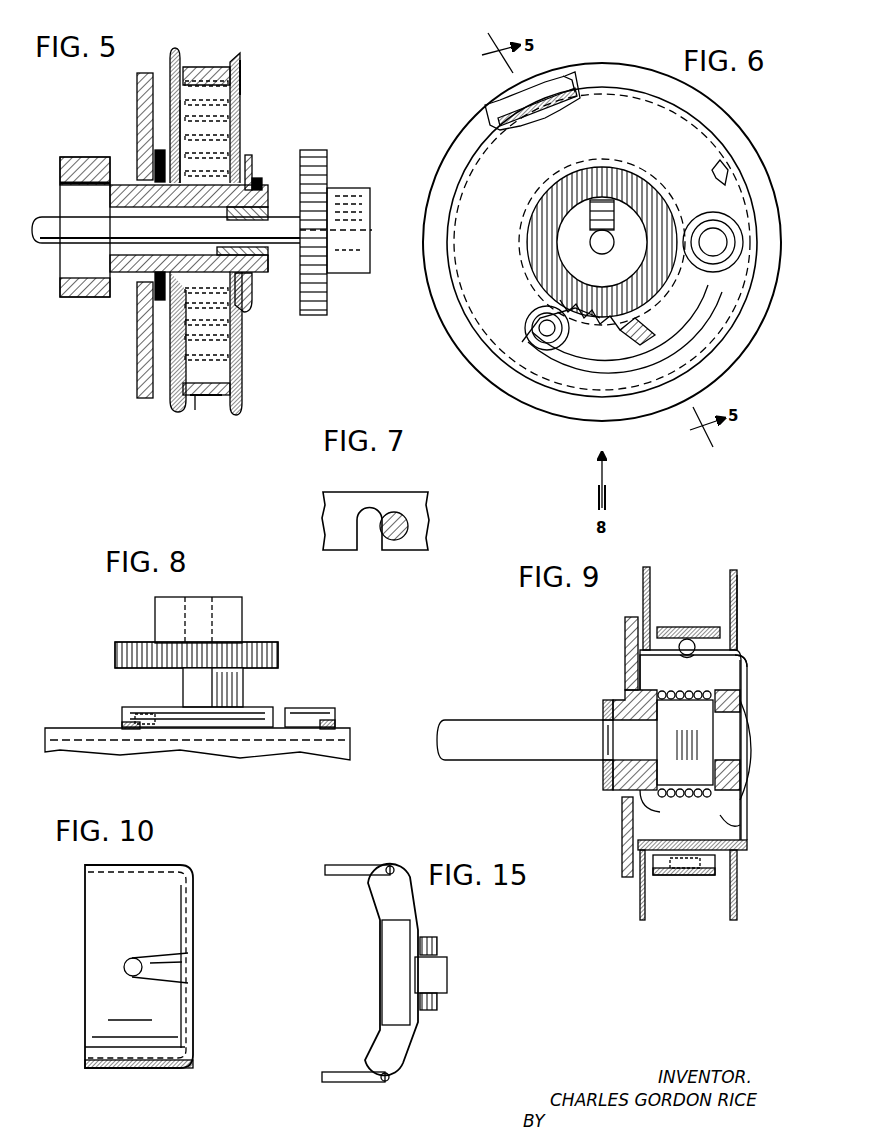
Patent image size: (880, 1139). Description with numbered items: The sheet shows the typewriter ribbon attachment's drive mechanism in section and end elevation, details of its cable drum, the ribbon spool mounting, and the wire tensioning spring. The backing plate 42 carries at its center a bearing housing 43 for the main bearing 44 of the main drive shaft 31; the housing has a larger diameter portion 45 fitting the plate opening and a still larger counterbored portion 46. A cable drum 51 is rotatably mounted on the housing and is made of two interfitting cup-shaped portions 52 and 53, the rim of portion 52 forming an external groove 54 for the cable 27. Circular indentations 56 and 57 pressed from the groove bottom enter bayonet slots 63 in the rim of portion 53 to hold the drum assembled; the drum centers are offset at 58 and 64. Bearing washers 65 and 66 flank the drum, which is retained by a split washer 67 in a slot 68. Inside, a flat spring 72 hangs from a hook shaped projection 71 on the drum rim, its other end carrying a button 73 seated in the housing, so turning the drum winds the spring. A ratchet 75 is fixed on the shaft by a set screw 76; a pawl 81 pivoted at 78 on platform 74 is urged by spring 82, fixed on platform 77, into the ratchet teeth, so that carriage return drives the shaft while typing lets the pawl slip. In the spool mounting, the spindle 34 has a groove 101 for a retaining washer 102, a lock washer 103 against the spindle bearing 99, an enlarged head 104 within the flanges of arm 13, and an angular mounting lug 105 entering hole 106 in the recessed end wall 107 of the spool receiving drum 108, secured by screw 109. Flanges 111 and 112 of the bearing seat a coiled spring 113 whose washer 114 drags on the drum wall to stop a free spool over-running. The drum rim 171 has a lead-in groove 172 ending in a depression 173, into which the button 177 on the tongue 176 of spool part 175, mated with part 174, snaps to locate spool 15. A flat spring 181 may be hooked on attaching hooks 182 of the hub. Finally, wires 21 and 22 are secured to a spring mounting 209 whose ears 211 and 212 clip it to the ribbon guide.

In FIG. 9, the arm 13 is at (626, 640).
In FIG. 9, the spool 15 is at (738, 590).
In FIG. 15, the wire 21 is at (330, 865).
In FIG. 15, the wire 22 is at (340, 1082).
In FIG. 5, the cable 27 is at (198, 410).
In FIG. 5, the main drive shaft 31 is at (48, 232).
In FIG. 6, the main drive shaft 31 is at (592, 238).
In FIG. 8, the main drive shaft 31 is at (212, 628).
In FIG. 9, the spindle 34 is at (500, 760).
In FIG. 5, the backing plate 42 is at (138, 370).
In FIG. 5, the bearing housing 43 is at (262, 270).
In FIG. 5, the main bearing 44 is at (255, 255).
In FIG. 5, the larger diameter portion 45 is at (130, 272).
In FIG. 5, the still larger diameter portion 46 is at (75, 297).
In FIG. 5, the cable drum 51 is at (245, 385).
In FIG. 5, the cup-shaped portion 52 is at (172, 400).
In FIG. 5, the cup-shaped portion 53 is at (222, 390).
In FIG. 6, the cup-shaped portion 53 is at (712, 148).
In FIG. 7, the cup-shaped portion 53 is at (366, 502).
In FIG. 8, the cup-shaped portion 53 is at (95, 742).
In FIG. 5, the external groove 54 is at (206, 398).
In FIG. 6, the external groove 54 is at (560, 80).
In FIG. 5, the indentation 56 is at (243, 90).
In FIG. 6, the indentation 56 is at (498, 110).
In FIG. 7, the indentation 56 is at (402, 513).
In FIG. 5, the indentation 57 is at (218, 373).
In FIG. 5, the outwardly offset center 58 is at (158, 295).
In FIG. 7, the bayonet slot 63 is at (368, 530).
In FIG. 5, the outwardly offset center 64 is at (246, 312).
In FIG. 5, the bearing washer 65 is at (156, 168).
In FIG. 5, the bearing washer 66 is at (250, 160).
In FIG. 5, the split washer 67 is at (258, 183).
In FIG. 5, the slot 68 is at (262, 205).
In FIG. 6, the hook shaped projection 71 is at (732, 172).
In FIG. 5, the flat spring 72 is at (212, 352).
In FIG. 5, the button 73 is at (178, 176).
In FIG. 8, the mounting platform 74 is at (338, 732).
In FIG. 5, the ratchet 75 is at (314, 152).
In FIG. 6, the ratchet 75 is at (532, 268).
In FIG. 8, the ratchet 75 is at (118, 652).
In FIG. 5, the set screw 76 is at (352, 196).
In FIG. 6, the set screw 76 is at (608, 200).
In FIG. 6, the mounting platform 77 is at (528, 345).
In FIG. 8, the mounting platform 77 is at (122, 727).
In FIG. 8, the pivot 78 is at (302, 742).
In FIG. 6, the pawl 81 is at (715, 285).
In FIG. 8, the pawl 81 is at (330, 725).
In FIG. 6, the spring 82 is at (580, 372).
In FIG. 8, the spring 82 is at (130, 707).
In FIG. 9, the spindle bearing 99 is at (625, 700).
In FIG. 9, the groove 101 is at (604, 738).
In FIG. 9, the retaining washer 102 is at (604, 708).
In FIG. 9, the lock washer 103 is at (612, 790).
In FIG. 9, the enlarged head 104 is at (685, 790).
In FIG. 9, the mounting lug 105 is at (740, 720).
In FIG. 10, the hole 106 is at (190, 950).
In FIG. 9, the recessed end wall 107 is at (748, 690).
In FIG. 10, the recessed end wall 107 is at (186, 905).
In FIG. 9, the spool receiving drum 108 is at (745, 850).
In FIG. 10, the spool receiving drum 108 is at (160, 890).
In FIG. 9, the screw 109 is at (748, 735).
In FIG. 9, the intermediate flange 111 is at (633, 690).
In FIG. 9, the flange 112 is at (658, 798).
In FIG. 9, the coiled spring 113 is at (640, 805).
In FIG. 9, the washer 114 is at (742, 822).
In FIG. 9, the rim 171 is at (745, 662).
In FIG. 10, the rim 171 is at (136, 1070).
In FIG. 10, the lead-in groove 172 is at (150, 972).
In FIG. 9, the depression 173 is at (680, 652).
In FIG. 10, the depression 173 is at (125, 967).
In FIG. 9, the spool part 174 is at (648, 585).
In FIG. 9, the spool part 175 is at (730, 590).
In FIG. 9, the cut-out tongue 176 is at (698, 627).
In FIG. 9, the button 177 is at (692, 656).
In FIG. 9, the flat spring 181 is at (660, 880).
In FIG. 9, the attaching hook 182 is at (690, 878).
In FIG. 15, the spring mounting 209 is at (422, 1030).
In FIG. 15, the ear 211 is at (445, 960).
In FIG. 15, the ear 212 is at (432, 937).